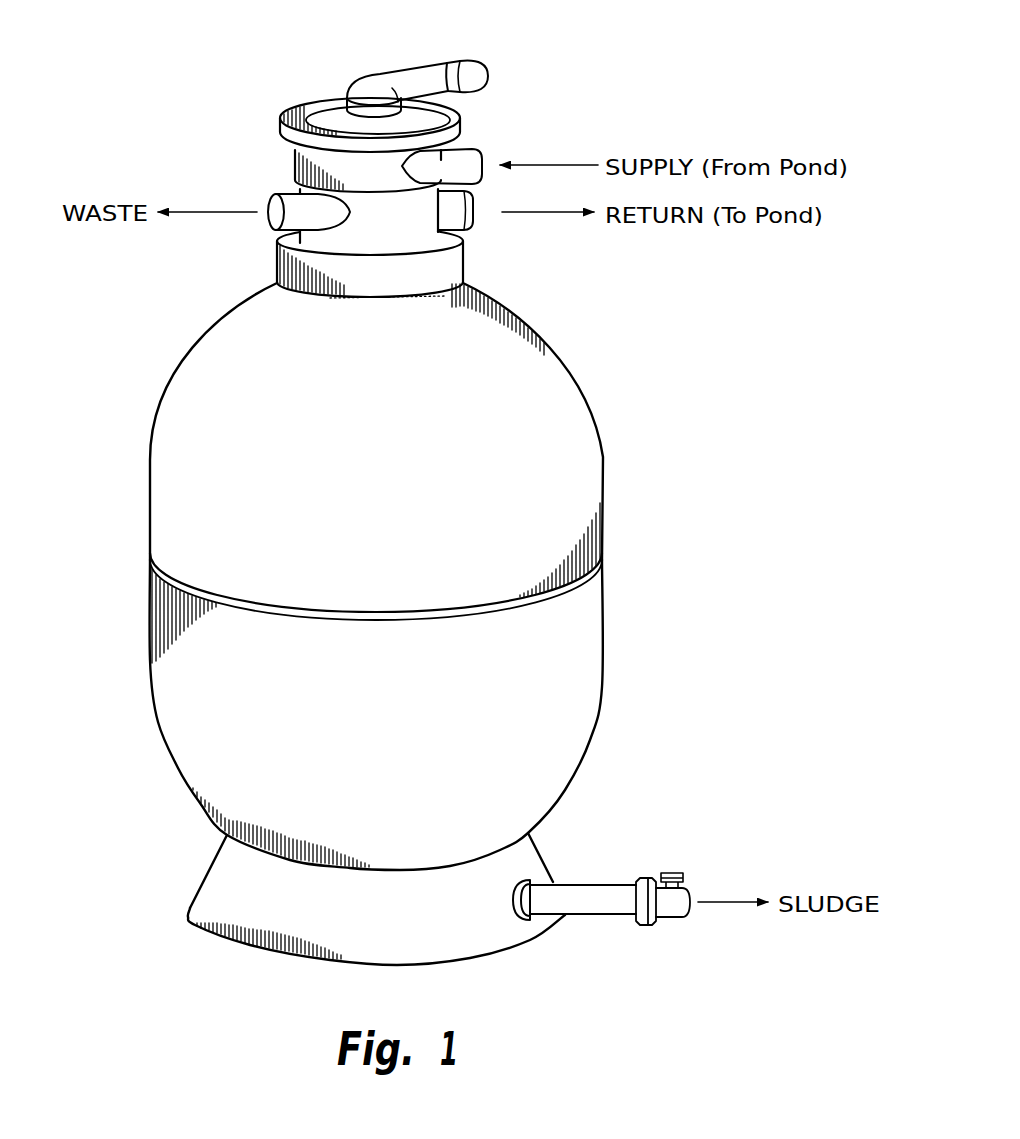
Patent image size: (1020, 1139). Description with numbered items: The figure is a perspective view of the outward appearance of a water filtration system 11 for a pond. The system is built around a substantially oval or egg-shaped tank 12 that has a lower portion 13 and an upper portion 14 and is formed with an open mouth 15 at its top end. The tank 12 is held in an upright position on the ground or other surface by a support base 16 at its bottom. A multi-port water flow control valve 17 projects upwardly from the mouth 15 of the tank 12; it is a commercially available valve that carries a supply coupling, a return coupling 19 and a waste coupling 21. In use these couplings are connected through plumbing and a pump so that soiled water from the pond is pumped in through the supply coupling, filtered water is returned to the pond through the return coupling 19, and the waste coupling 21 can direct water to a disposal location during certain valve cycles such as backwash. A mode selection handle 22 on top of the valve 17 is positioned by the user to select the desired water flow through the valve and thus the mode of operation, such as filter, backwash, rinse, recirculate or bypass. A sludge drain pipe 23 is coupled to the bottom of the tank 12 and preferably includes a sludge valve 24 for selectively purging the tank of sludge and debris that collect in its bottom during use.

The filtration system 11 is at (479, 551).
The tank 12 is at (642, 526).
The lower portion 13 is at (535, 793).
The upper portion 14 is at (523, 359).
The open mouth 15 is at (348, 277).
The support base 16 is at (480, 150).
The multi-port water flow control valve 17 is at (334, 133).
The return coupling 19 is at (473, 226).
The waste coupling 21 is at (285, 195).
The mode selection handle 22 is at (427, 82).
The sludge drain pipe 23 is at (585, 908).
The sludge valve 24 is at (688, 856).